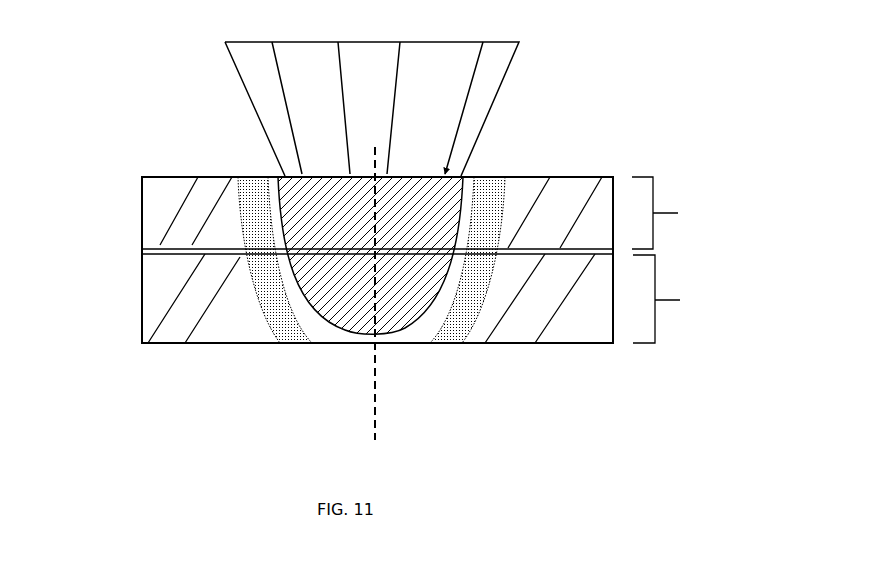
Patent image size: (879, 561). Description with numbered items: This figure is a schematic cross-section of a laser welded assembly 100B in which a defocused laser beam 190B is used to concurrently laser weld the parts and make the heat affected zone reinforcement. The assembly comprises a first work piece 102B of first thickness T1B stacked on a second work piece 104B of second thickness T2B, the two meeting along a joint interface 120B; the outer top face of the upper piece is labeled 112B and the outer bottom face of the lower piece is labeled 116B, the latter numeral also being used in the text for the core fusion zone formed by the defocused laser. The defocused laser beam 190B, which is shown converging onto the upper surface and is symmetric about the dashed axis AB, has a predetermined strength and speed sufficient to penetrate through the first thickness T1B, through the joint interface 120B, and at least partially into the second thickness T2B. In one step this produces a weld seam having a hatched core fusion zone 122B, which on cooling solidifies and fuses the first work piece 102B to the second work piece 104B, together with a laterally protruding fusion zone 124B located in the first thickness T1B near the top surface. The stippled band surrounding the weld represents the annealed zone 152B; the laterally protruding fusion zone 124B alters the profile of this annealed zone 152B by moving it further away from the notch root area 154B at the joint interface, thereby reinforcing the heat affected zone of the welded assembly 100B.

The laser welded assembly 100B is at (734, 191).
The first work piece 102B is at (162, 223).
The second work piece 104B is at (157, 302).
The first surface 112B is at (595, 176).
The core fusion zone 116B is at (168, 347).
The joint interface 120B is at (232, 258).
The core fusion zone 122B is at (403, 282).
The laterally protruding fusion zone 124B is at (490, 176).
The annealed zone 152B is at (242, 192).
The notch root area 154B is at (277, 233).
The defocused laser beam 190B is at (523, 62).
The central axis AB is at (368, 413).
The first thickness T1B is at (680, 213).
The second thickness T2B is at (680, 299).